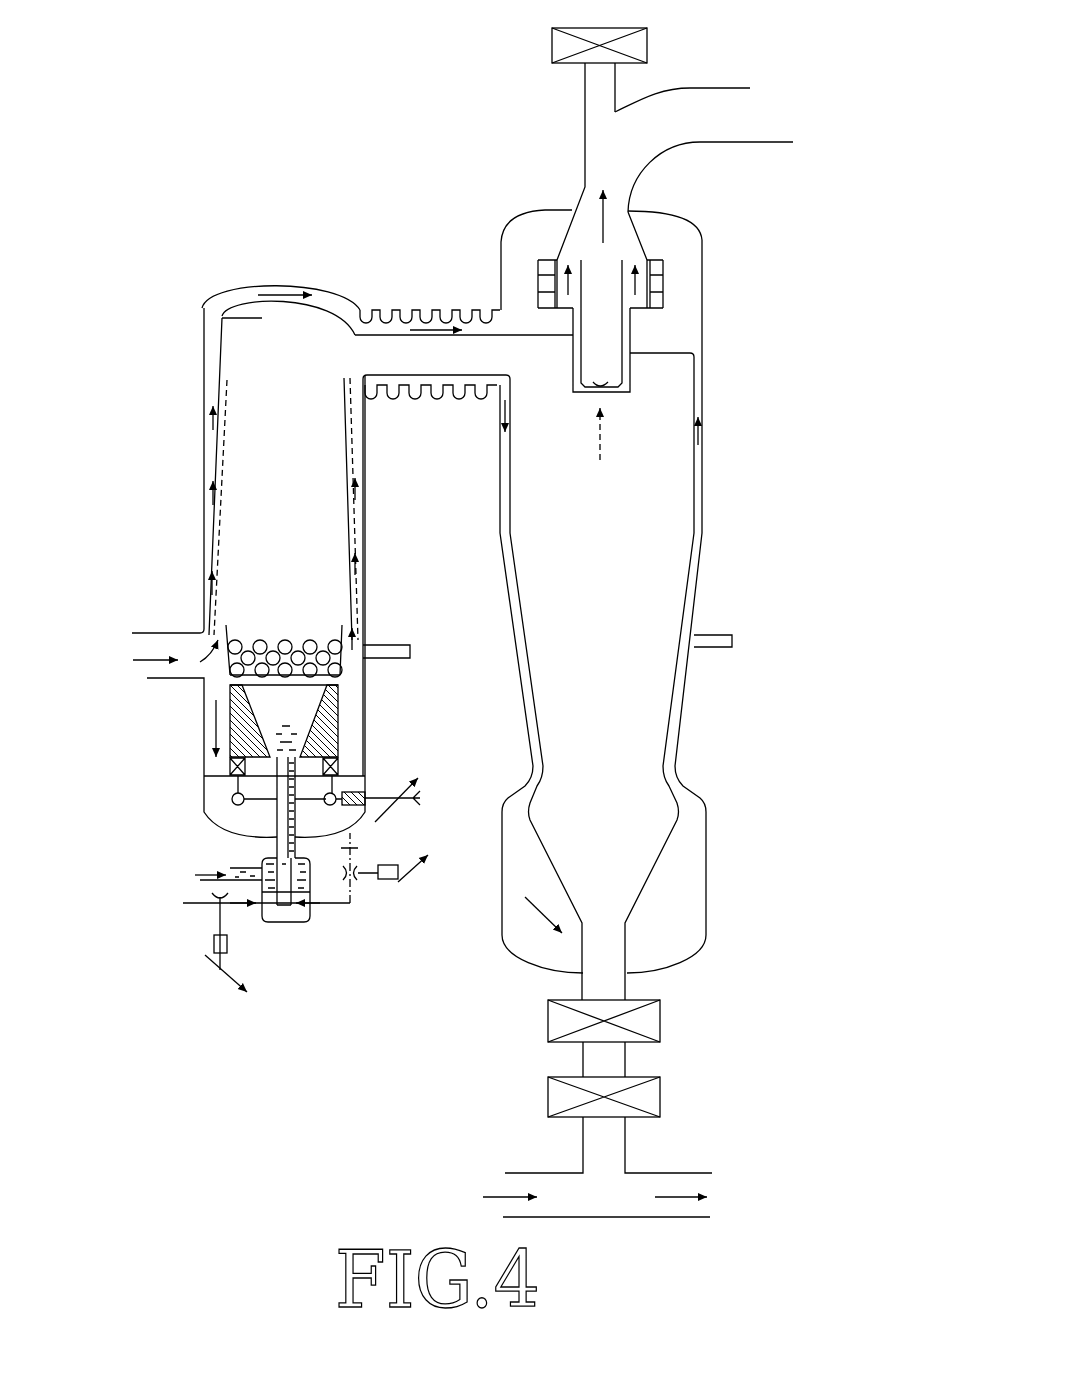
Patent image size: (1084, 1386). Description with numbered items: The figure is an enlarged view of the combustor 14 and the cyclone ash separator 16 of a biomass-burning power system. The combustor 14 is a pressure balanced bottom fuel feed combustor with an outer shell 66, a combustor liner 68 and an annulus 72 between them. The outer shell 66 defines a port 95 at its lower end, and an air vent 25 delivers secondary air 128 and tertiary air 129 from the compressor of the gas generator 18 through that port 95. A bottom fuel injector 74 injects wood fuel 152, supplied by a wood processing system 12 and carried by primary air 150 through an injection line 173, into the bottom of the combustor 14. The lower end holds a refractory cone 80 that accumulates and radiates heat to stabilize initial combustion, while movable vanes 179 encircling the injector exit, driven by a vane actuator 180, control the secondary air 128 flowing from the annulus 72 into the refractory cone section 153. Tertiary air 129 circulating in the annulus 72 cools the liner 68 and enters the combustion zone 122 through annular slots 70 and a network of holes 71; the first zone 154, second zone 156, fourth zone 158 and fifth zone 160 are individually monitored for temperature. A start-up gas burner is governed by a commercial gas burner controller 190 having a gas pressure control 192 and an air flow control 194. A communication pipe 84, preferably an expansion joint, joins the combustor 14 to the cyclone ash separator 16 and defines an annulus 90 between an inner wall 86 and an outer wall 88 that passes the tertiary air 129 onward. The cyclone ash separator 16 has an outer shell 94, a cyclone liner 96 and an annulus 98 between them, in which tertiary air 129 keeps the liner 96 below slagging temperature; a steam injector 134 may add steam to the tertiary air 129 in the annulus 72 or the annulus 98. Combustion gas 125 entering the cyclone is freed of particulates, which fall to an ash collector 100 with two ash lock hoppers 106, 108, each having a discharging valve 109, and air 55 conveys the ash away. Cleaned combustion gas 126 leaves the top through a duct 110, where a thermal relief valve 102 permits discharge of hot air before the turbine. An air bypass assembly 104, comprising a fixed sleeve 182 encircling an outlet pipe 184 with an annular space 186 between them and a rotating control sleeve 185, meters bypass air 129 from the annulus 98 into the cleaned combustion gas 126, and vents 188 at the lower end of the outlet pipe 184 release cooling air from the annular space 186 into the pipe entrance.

The wood processing system 12 is at (680, 723).
The combustor 14 is at (226, 195).
The cyclone ash separator 16 is at (832, 493).
The gas generator 18 is at (265, 910).
The air vent 25 is at (177, 633).
The air 55 is at (512, 1193).
The outer shell 66 is at (205, 475).
The combustor lining 68 is at (215, 520).
The annular slots 70 is at (215, 395).
The network of openings 71 is at (312, 643).
The annulus 72 is at (207, 340).
The bottom fuel injector 74 is at (275, 850).
The refractory cone 80 is at (238, 700).
The communication pipe 84 is at (450, 268).
The inner wall 86 is at (387, 316).
The outer wall 88 is at (470, 312).
The annulus 90 is at (392, 312).
The outer shell 94 is at (700, 487).
The port 95 is at (200, 680).
The cyclone liner 96 is at (700, 535).
The annulus 98 is at (700, 573).
The ash collector 100 is at (800, 1030).
The thermal relief valve 102 is at (647, 46).
The air bypass assembly 104 is at (848, 320).
The ash lock hopper 106 is at (627, 982).
The ash lock hopper 108 is at (627, 1052).
The discharging valve 109 is at (548, 1023).
The duct 110 is at (688, 86).
The combustion zone 122 is at (310, 541).
The combustion gas 125 is at (443, 354).
The cleaned combustion gas 126 is at (590, 202).
The secondary air 128 is at (222, 760).
The tertiary air 129 is at (210, 425).
The steam injector 134 is at (405, 642).
The primary air 150 is at (249, 890).
The wood fuel 152 is at (250, 867).
The refractory cone section 153 is at (303, 700).
The first combustion zone 154 is at (323, 672).
The second zone 156 is at (330, 578).
The fourth zone 158 is at (330, 443).
The fifth zone 160 is at (313, 335).
The injection line 173 is at (205, 905).
The movable vanes 179 is at (212, 757).
The vane actuator 180 is at (373, 786).
The fixed sleeve 182 is at (663, 309).
The outlet pipe 184 is at (622, 268).
The control sleeve 185 is at (653, 271).
The annular space 186 is at (632, 332).
The vents 188 is at (597, 379).
The commercial gas burner controller 190 is at (378, 890).
The gas pressure control 192 is at (203, 942).
The air flow control 194 is at (382, 885).